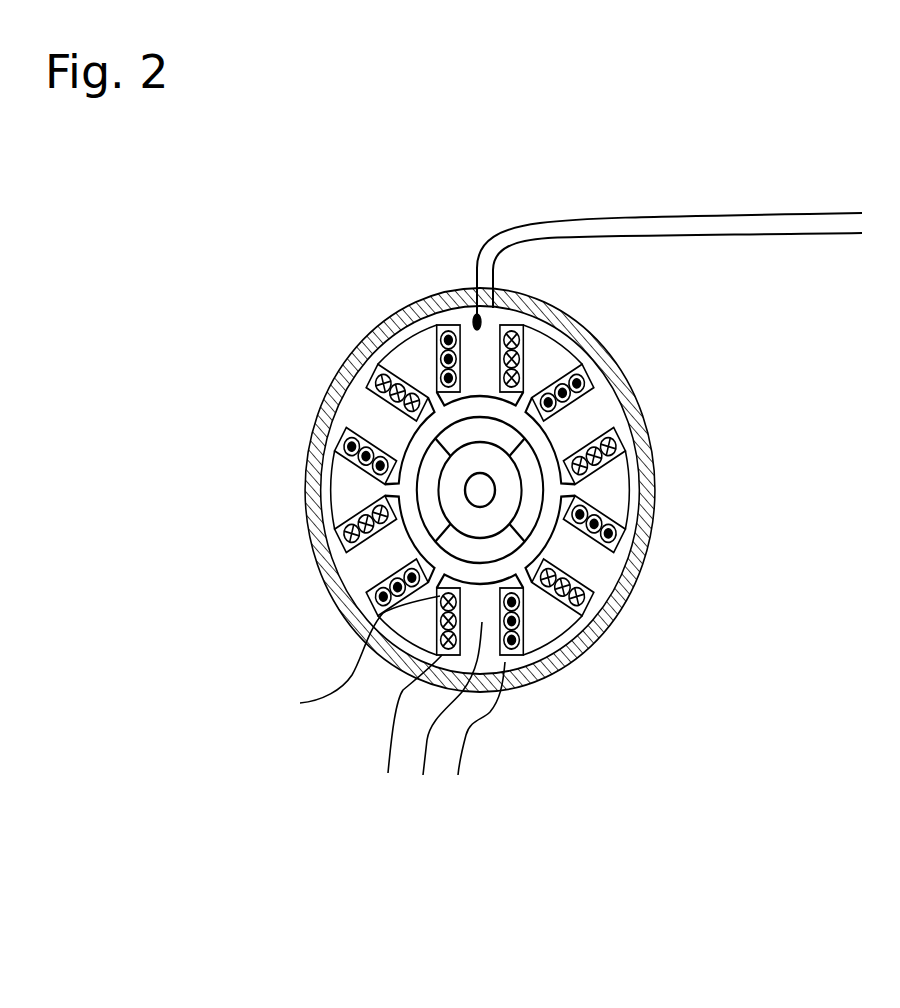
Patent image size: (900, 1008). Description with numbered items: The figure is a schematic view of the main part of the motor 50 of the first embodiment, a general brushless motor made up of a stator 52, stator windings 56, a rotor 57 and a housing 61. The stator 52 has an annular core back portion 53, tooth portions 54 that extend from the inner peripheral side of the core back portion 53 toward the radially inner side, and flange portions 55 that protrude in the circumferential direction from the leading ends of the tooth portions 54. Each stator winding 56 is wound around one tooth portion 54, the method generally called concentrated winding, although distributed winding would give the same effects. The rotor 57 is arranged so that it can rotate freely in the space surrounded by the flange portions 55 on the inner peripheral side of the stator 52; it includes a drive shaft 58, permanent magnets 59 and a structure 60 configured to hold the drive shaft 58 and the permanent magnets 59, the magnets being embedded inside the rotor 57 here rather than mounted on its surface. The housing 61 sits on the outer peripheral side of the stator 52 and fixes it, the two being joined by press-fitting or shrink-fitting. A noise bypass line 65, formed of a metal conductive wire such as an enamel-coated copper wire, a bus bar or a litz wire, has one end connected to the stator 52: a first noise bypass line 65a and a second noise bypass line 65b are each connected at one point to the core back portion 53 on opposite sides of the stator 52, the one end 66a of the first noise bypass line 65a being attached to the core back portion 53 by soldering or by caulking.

The motor 50 is at (245, 249).
The stator 52 is at (497, 797).
The core back portion 53 is at (477, 736).
The tooth portions 54 is at (445, 716).
The flange portions 55 is at (405, 733).
The stator windings 56 is at (348, 658).
The rotor 57 is at (710, 350).
The drive shaft 58 is at (487, 487).
The permanent magnets 59 is at (510, 502).
The structure 60 is at (530, 525).
The housing 61 is at (334, 381).
The noise bypass line 65 is at (792, 172).
The first noise bypass line 65a is at (667, 217).
The second noise bypass line 65b is at (741, 234).
The one end of the noise bypass line 66a is at (470, 321).